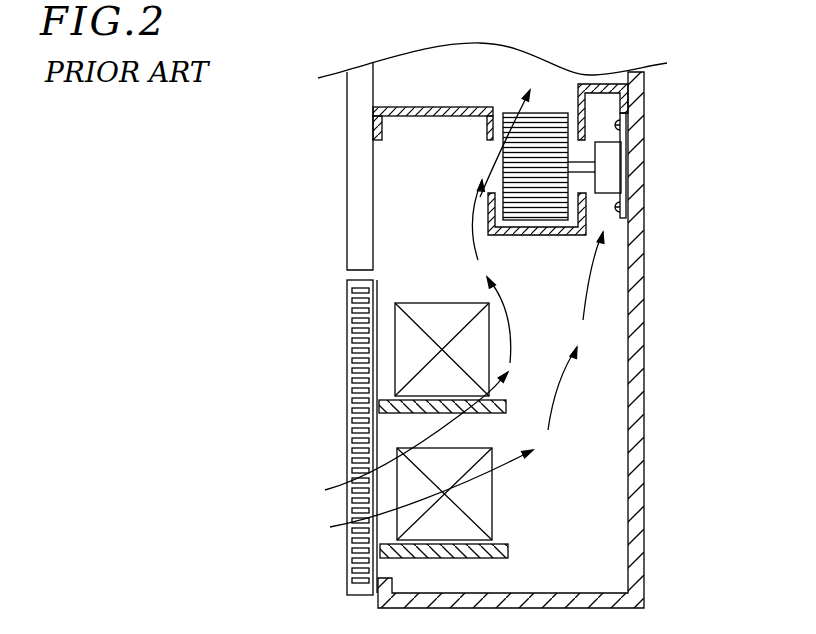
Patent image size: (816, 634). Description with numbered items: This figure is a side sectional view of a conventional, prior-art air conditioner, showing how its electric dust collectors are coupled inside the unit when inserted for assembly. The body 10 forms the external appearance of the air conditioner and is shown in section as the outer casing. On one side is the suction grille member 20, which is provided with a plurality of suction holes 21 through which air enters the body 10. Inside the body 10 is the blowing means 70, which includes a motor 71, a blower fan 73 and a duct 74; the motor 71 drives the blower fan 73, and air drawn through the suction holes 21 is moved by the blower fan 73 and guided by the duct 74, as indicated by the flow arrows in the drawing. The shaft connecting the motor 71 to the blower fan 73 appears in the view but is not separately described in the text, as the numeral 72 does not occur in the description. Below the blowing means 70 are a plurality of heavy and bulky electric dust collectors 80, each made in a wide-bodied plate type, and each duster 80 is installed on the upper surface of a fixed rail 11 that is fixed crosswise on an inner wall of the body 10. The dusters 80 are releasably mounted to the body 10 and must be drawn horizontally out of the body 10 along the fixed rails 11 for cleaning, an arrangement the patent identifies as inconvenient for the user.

The body 10 is at (637, 255).
The fixed rail 11 is at (492, 538).
The suction grille member 20 is at (313, 437).
The suction holes 21 is at (358, 543).
The blowing means 70 is at (618, 162).
The motor 71 is at (613, 182).
The shaft 72 is at (580, 165).
The blower fan 73 is at (523, 143).
The duct 74 is at (615, 90).
The electric dust collector 80 is at (413, 492).